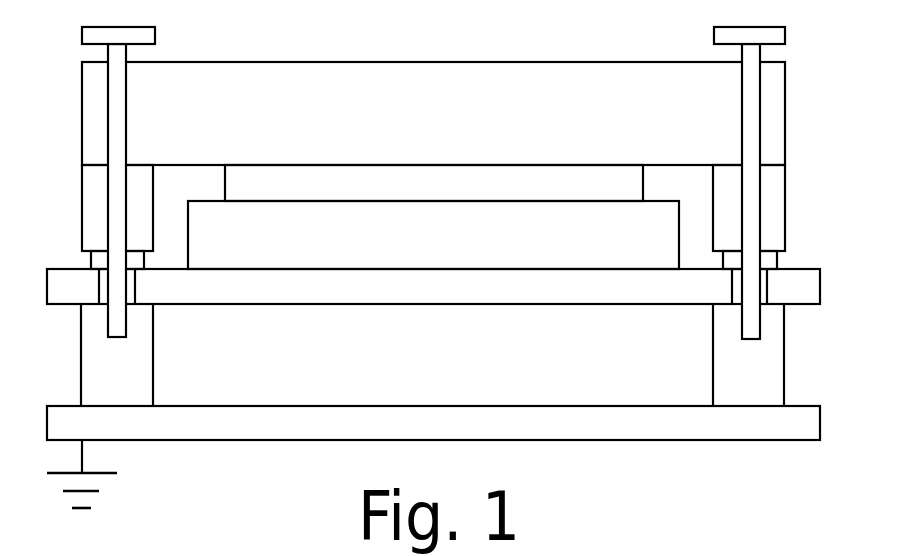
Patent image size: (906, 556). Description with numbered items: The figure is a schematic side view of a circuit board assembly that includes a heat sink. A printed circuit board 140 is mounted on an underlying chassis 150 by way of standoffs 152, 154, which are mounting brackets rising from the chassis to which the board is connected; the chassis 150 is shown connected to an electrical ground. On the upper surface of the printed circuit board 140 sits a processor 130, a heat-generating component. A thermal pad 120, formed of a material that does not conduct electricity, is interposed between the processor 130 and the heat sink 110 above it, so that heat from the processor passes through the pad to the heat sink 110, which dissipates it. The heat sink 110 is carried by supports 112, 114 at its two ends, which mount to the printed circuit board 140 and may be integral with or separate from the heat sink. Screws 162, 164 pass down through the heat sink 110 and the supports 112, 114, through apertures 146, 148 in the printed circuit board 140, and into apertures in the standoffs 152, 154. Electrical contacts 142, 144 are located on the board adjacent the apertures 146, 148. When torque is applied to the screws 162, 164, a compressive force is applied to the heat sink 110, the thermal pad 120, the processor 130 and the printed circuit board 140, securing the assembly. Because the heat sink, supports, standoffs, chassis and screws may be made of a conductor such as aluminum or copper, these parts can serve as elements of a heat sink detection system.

The heat sink 110 is at (505, 126).
The support 112 is at (82, 210).
The support 114 is at (785, 210).
The thermal pad 120 is at (521, 195).
The processor 130 is at (508, 246).
The printed circuit board 140 is at (478, 297).
The first electrical contact 142 is at (91, 259).
The second electrical contact 144 is at (777, 264).
The first aperture 146 is at (99, 285).
The second aperture 148 is at (767, 290).
The chassis 150 is at (495, 435).
The standoff 152 is at (135, 365).
The standoff 154 is at (768, 366).
The screw 162 is at (155, 38).
The screw 164 is at (785, 38).